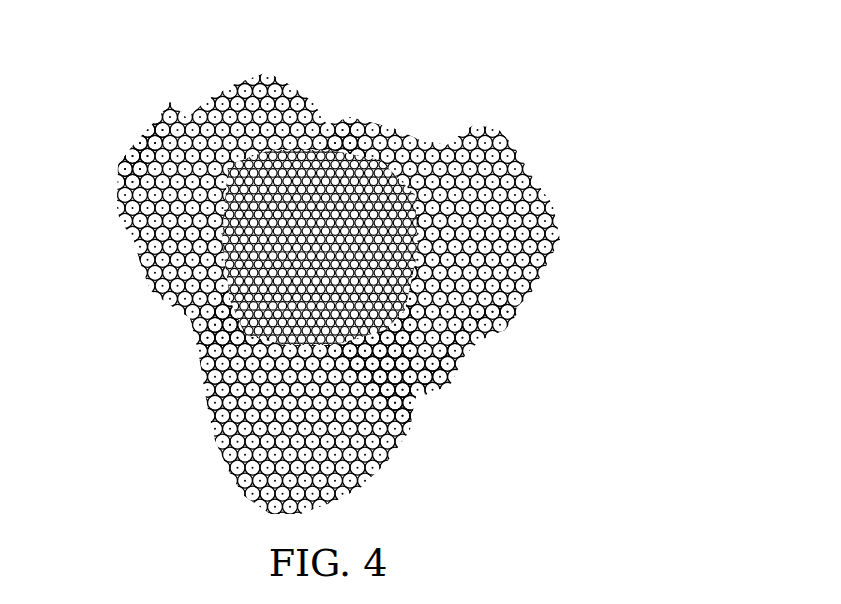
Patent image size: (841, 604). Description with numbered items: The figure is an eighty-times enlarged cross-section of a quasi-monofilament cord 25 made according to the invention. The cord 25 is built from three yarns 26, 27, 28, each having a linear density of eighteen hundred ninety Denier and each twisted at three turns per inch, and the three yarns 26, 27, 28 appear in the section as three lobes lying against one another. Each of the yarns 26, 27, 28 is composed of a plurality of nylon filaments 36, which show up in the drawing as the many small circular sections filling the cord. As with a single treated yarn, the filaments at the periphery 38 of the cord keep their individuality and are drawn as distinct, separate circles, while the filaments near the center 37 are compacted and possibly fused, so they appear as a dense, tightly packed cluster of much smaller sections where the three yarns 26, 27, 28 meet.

The quasi-monofilament cord 25 is at (405, 277).
The yarn 26 is at (379, 293).
The yarn 27 is at (347, 301).
The yarn 28 is at (319, 269).
The nylon filaments 36 is at (347, 293).
The center 37 is at (261, 293).
The periphery 38 is at (309, 293).